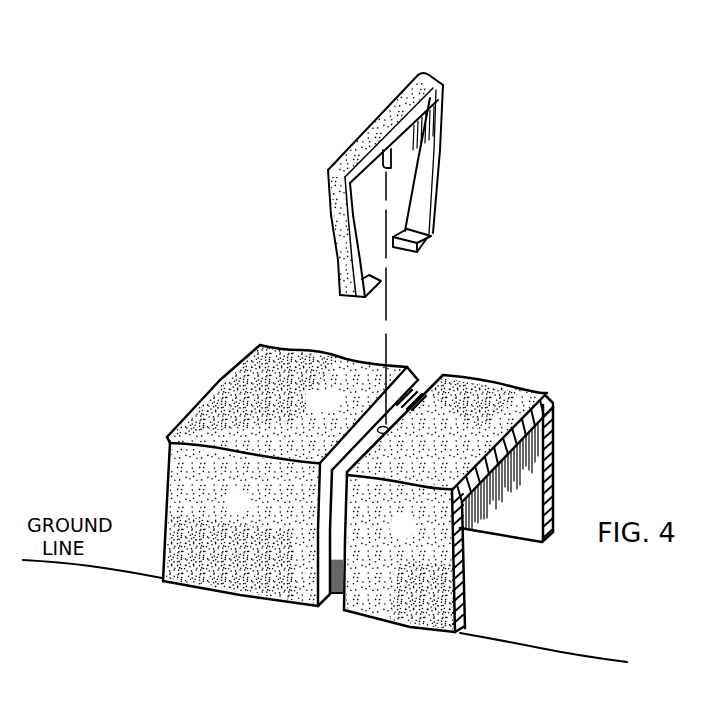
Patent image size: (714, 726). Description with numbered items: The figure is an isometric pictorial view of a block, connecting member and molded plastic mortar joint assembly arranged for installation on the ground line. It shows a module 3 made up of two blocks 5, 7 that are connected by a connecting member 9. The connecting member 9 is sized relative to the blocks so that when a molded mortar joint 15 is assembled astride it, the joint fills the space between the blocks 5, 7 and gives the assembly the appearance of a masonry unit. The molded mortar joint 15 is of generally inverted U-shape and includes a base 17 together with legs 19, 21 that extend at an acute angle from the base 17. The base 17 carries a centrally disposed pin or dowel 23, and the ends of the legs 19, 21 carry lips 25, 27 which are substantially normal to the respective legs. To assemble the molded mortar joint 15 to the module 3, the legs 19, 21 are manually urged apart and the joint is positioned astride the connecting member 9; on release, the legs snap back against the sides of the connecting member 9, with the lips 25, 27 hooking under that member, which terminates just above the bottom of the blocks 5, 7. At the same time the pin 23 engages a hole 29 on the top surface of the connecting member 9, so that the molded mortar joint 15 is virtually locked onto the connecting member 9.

The module 3 is at (207, 303).
The block 5 is at (247, 517).
The block 7 is at (411, 541).
The connecting member 9 is at (340, 597).
The molded mortar joint 15 is at (452, 73).
The base 17 is at (370, 120).
The leg 19 is at (327, 193).
The leg 21 is at (445, 117).
The pin 23 is at (392, 164).
The lip 25 is at (372, 297).
The lip 27 is at (420, 247).
The hole 29 is at (383, 431).